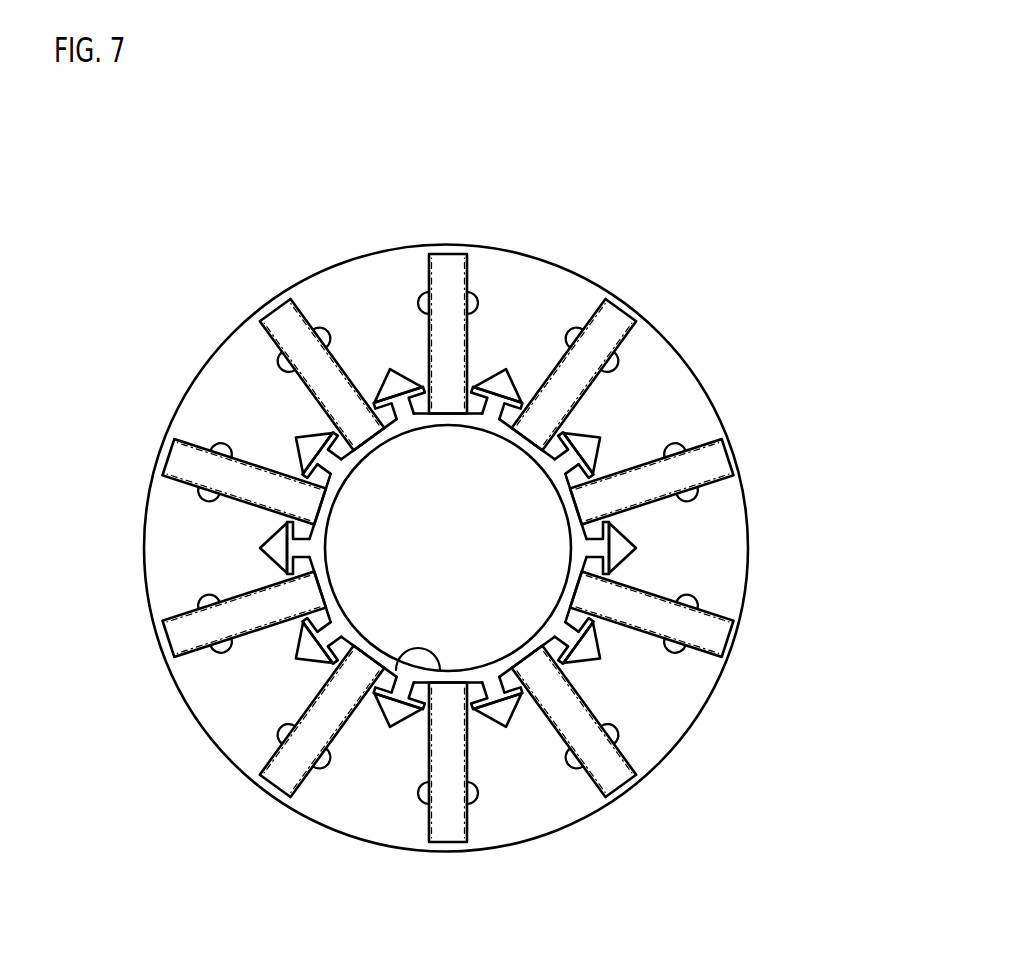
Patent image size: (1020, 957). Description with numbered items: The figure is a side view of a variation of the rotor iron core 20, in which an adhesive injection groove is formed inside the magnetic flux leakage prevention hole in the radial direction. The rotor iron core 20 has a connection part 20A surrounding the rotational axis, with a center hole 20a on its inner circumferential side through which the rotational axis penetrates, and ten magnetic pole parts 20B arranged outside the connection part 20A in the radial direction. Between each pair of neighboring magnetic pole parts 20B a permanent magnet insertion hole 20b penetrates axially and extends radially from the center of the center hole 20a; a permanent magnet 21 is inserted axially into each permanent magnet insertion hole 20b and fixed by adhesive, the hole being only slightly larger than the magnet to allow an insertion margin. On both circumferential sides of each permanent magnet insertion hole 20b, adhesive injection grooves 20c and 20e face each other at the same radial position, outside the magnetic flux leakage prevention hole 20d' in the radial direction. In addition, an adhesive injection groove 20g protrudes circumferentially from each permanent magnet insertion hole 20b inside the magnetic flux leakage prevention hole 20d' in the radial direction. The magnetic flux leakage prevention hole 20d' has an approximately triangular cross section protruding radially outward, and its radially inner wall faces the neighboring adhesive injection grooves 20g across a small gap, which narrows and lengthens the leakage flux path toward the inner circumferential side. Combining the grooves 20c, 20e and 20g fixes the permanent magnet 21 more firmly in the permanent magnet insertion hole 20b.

The rotor iron core 20 is at (460, 549).
The connection part 20A is at (488, 677).
The magnetic pole part 20B is at (740, 540).
The center hole 20a is at (397, 670).
The permanent magnet insertion hole 20b is at (450, 252).
The adhesive injection groove 20c is at (420, 308).
The magnetic flux leakage prevention hole 20d' is at (413, 551).
The adhesive injection groove 20e is at (483, 306).
The adhesive injection groove 20g is at (433, 420).
The permanent magnet 21 is at (445, 272).